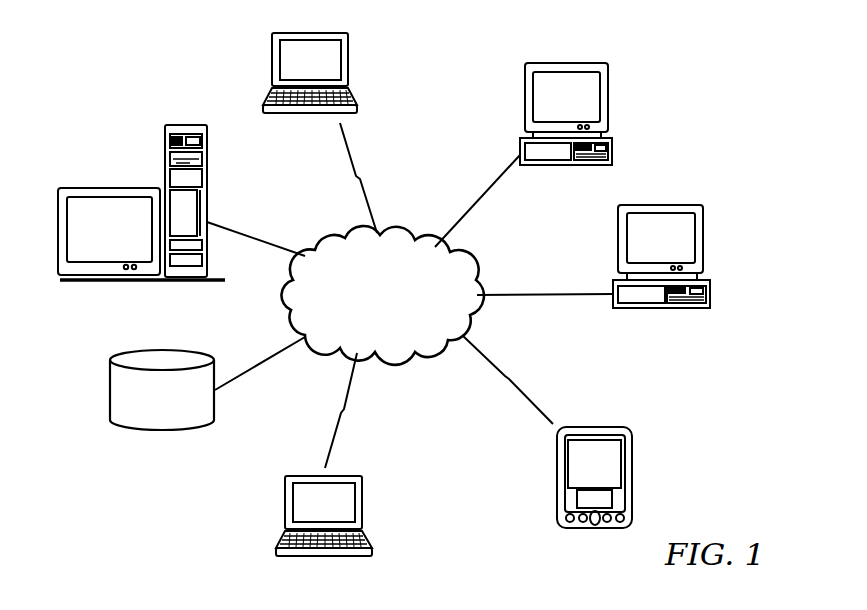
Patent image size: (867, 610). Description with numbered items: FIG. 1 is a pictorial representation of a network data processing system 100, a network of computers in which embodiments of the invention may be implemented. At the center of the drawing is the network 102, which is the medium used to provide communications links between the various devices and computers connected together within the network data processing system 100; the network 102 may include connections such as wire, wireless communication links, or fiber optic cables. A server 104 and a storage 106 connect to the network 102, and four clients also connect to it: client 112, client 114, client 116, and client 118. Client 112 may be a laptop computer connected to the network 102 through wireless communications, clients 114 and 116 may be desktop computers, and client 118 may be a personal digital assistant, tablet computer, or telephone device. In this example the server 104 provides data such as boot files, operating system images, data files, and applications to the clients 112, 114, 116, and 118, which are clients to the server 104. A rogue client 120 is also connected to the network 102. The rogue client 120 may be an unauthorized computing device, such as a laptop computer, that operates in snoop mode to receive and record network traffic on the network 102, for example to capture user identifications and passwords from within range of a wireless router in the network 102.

The network data processing system 100 is at (446, 93).
The network 102 is at (405, 325).
The server 104 is at (165, 147).
The storage 106 is at (110, 390).
The client 112 is at (272, 57).
The client 114 is at (610, 107).
The client 116 is at (703, 243).
The client 118 is at (632, 478).
The rogue client 120 is at (285, 504).